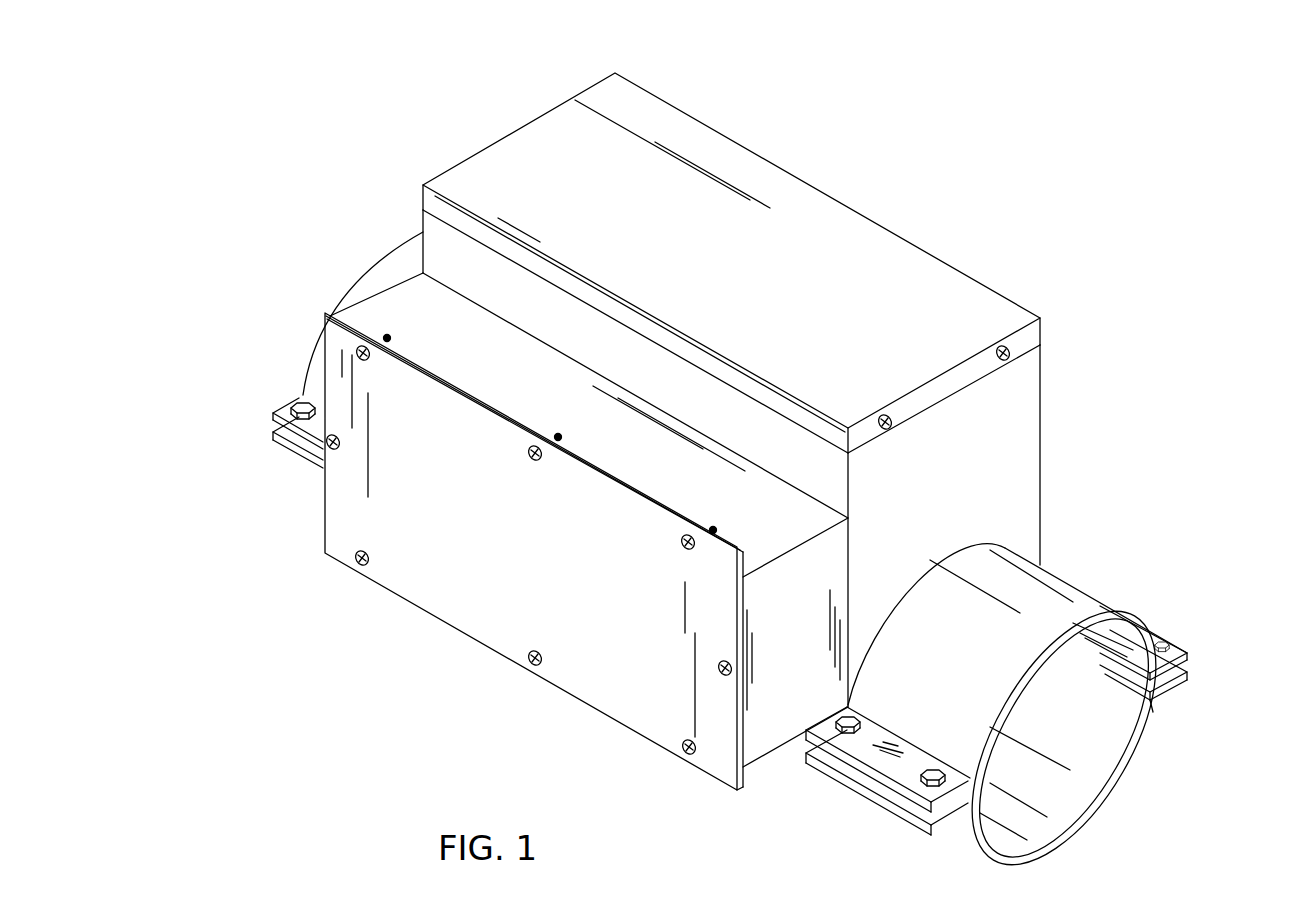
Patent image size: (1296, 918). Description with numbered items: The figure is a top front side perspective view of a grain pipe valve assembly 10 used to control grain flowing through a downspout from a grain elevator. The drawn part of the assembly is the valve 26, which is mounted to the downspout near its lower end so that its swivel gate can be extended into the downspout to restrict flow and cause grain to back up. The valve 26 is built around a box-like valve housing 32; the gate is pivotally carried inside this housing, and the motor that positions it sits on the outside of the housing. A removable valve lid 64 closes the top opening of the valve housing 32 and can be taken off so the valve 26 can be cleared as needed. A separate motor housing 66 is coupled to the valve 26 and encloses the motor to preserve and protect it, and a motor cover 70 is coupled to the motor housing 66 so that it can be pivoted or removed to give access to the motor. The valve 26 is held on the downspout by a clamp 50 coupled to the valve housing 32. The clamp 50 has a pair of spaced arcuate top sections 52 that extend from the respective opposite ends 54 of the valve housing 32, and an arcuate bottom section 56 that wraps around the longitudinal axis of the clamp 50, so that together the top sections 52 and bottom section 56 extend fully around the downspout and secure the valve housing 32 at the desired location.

The grain pipe valve assembly 10 is at (771, 483).
The valve 26 is at (745, 431).
The valve housing 32 is at (1013, 452).
The clamp 50 is at (1022, 699).
The arcuate top sections 52 is at (384, 270).
The opposite ends of the valve housing 54 is at (982, 540).
The bottom section 56 is at (1103, 777).
The valve lid 64 is at (815, 217).
The motor housing 66 is at (783, 717).
The motor cover 70 is at (583, 668).